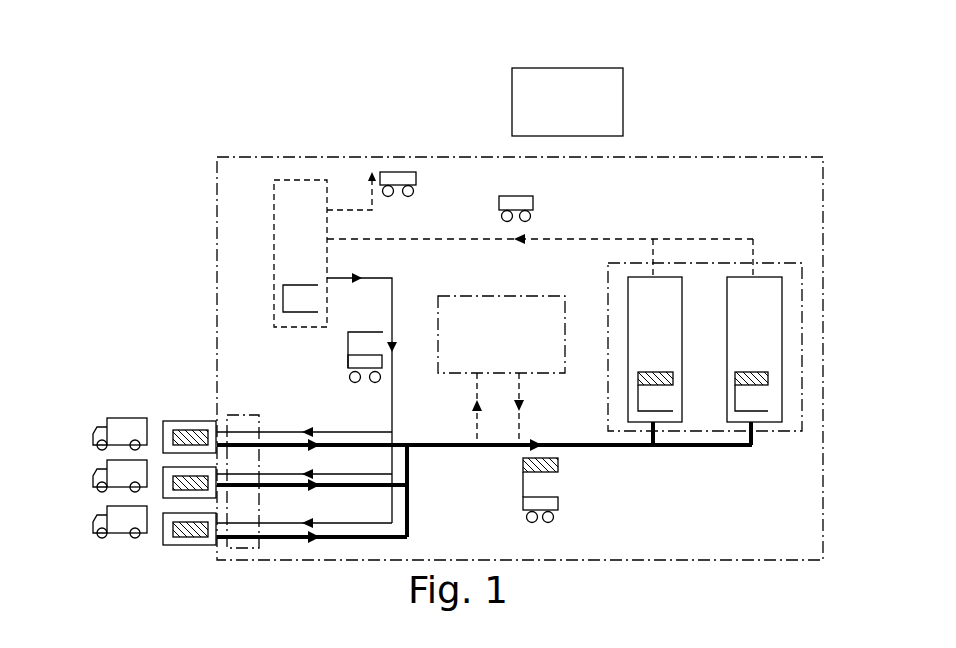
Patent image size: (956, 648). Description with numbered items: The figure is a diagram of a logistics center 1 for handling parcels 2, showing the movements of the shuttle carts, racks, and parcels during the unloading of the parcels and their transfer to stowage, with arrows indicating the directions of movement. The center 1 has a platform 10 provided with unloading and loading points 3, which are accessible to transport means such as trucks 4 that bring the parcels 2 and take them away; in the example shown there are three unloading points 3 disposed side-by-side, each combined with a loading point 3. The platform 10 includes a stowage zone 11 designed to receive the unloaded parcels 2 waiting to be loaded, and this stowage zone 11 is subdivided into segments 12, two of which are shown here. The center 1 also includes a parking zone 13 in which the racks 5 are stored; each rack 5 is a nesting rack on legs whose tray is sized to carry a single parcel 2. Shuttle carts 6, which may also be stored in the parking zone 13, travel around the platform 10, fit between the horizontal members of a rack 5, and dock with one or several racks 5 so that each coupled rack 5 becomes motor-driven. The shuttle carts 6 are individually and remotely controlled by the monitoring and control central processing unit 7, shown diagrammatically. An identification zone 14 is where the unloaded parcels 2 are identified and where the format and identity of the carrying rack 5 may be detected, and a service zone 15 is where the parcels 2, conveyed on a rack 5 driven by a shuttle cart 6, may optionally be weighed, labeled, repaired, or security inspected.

The logistics center 1 is at (705, 75).
The parcels 2 is at (197, 430).
The unloading and loading points 3 is at (158, 470).
The trucks 4 is at (93, 432).
The racks 5 is at (283, 305).
The shuttle carts 6 is at (400, 173).
The monitoring and control central processing unit 7 is at (577, 110).
The platform 10 is at (275, 155).
The stowage zone 11 is at (783, 262).
The segments 12 is at (641, 307).
The parking zone 13 is at (274, 213).
The identification zone 14 is at (237, 548).
The service zone 15 is at (493, 347).